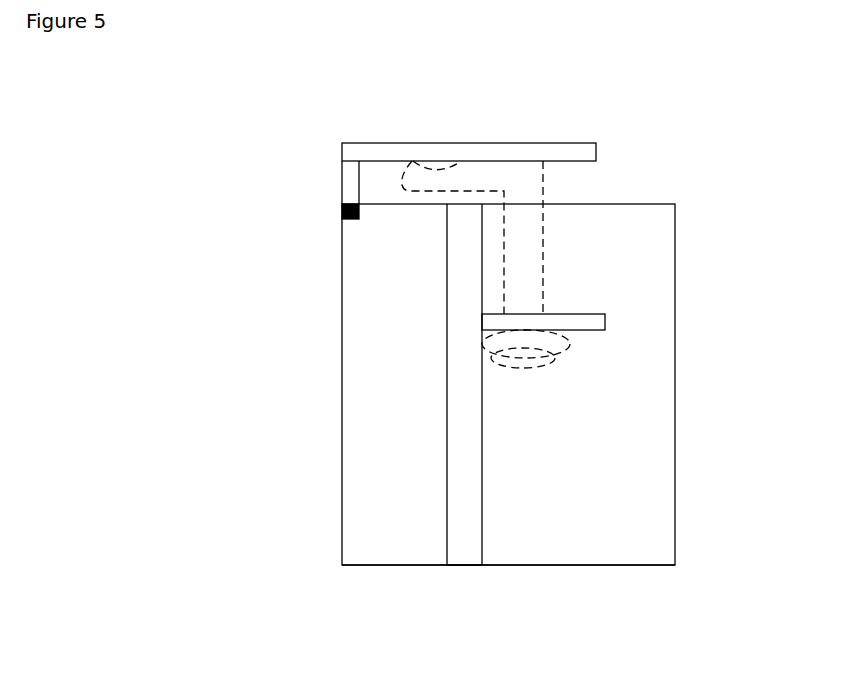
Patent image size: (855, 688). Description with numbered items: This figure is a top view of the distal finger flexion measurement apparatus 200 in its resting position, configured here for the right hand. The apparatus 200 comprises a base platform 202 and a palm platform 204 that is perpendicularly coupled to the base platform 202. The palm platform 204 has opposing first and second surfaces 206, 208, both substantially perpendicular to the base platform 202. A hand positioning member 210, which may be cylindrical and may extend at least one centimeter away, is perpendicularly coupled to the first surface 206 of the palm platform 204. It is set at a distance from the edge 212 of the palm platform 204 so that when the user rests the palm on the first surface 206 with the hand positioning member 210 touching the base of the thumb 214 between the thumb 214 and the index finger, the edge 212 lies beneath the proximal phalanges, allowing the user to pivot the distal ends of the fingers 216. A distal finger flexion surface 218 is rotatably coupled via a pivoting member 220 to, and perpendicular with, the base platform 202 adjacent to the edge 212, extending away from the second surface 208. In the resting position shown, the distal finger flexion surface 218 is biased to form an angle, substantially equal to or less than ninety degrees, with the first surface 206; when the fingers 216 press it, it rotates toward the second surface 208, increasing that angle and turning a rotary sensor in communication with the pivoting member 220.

The distal finger flexion apparatus 200 is at (675, 520).
The base platform 202 is at (605, 565).
The palm platform 204 is at (468, 565).
The first surface 206 is at (482, 468).
The second surface 208 is at (447, 433).
The hand positioning member 210 is at (605, 322).
The edge of the palm platform 212 is at (504, 204).
The thumb 214 is at (553, 362).
The fingers 216 is at (543, 230).
The distal finger flexion surface 218 is at (340, 152).
The pivoting member 220 is at (342, 213).